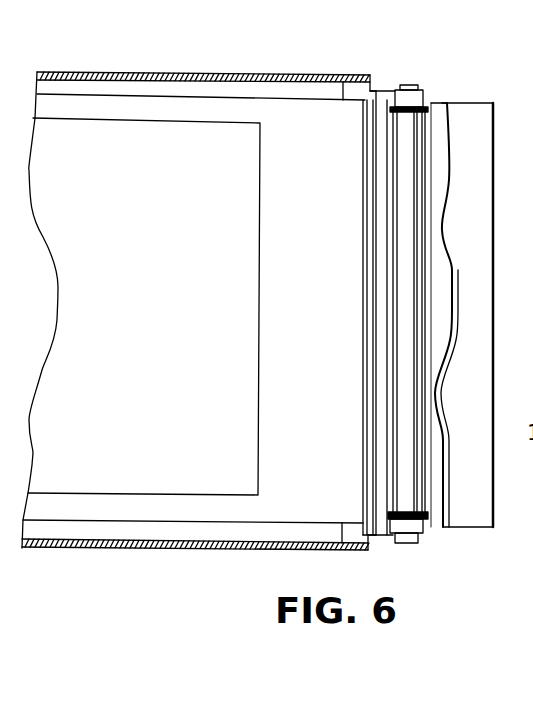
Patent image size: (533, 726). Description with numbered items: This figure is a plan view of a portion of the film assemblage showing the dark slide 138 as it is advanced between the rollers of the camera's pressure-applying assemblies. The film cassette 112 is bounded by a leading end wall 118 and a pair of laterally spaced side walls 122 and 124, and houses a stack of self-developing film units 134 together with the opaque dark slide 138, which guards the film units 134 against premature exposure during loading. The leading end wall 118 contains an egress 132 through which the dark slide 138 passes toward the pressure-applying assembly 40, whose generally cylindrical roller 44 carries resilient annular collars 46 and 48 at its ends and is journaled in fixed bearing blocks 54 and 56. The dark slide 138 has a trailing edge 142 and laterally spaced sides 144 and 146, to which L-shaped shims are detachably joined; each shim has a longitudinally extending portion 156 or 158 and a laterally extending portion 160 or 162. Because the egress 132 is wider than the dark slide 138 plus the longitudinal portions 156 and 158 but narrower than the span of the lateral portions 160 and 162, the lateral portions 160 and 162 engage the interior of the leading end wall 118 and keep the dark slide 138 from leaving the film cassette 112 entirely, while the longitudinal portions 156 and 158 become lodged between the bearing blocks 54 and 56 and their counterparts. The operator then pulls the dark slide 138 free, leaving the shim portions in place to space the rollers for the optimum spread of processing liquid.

The film cassette 112 is at (108, 46).
The side wall 124 is at (190, 73).
The side wall 122 is at (150, 549).
The film unit 134 is at (140, 257).
The laterally extending portion 162 is at (354, 78).
The laterally extending portion 160 is at (352, 549).
The egress 132 is at (383, 90).
The leading end wall 118 is at (378, 173).
The longitudinally extending portion 158 is at (376, 90).
The trailing edge 142 is at (387, 270).
The longitudinally extending portion 156 is at (382, 534).
The bearing block 56 is at (425, 92).
The annular collar 48 is at (441, 106).
The roller 44 is at (405, 203).
The annular collar 46 is at (407, 513).
The bearing block 54 is at (420, 535).
The dark slide 138 is at (485, 260).
The pressure-applying assembly 40 is at (458, 229).
The side 146 is at (493, 173).
The side edge 144 is at (482, 315).